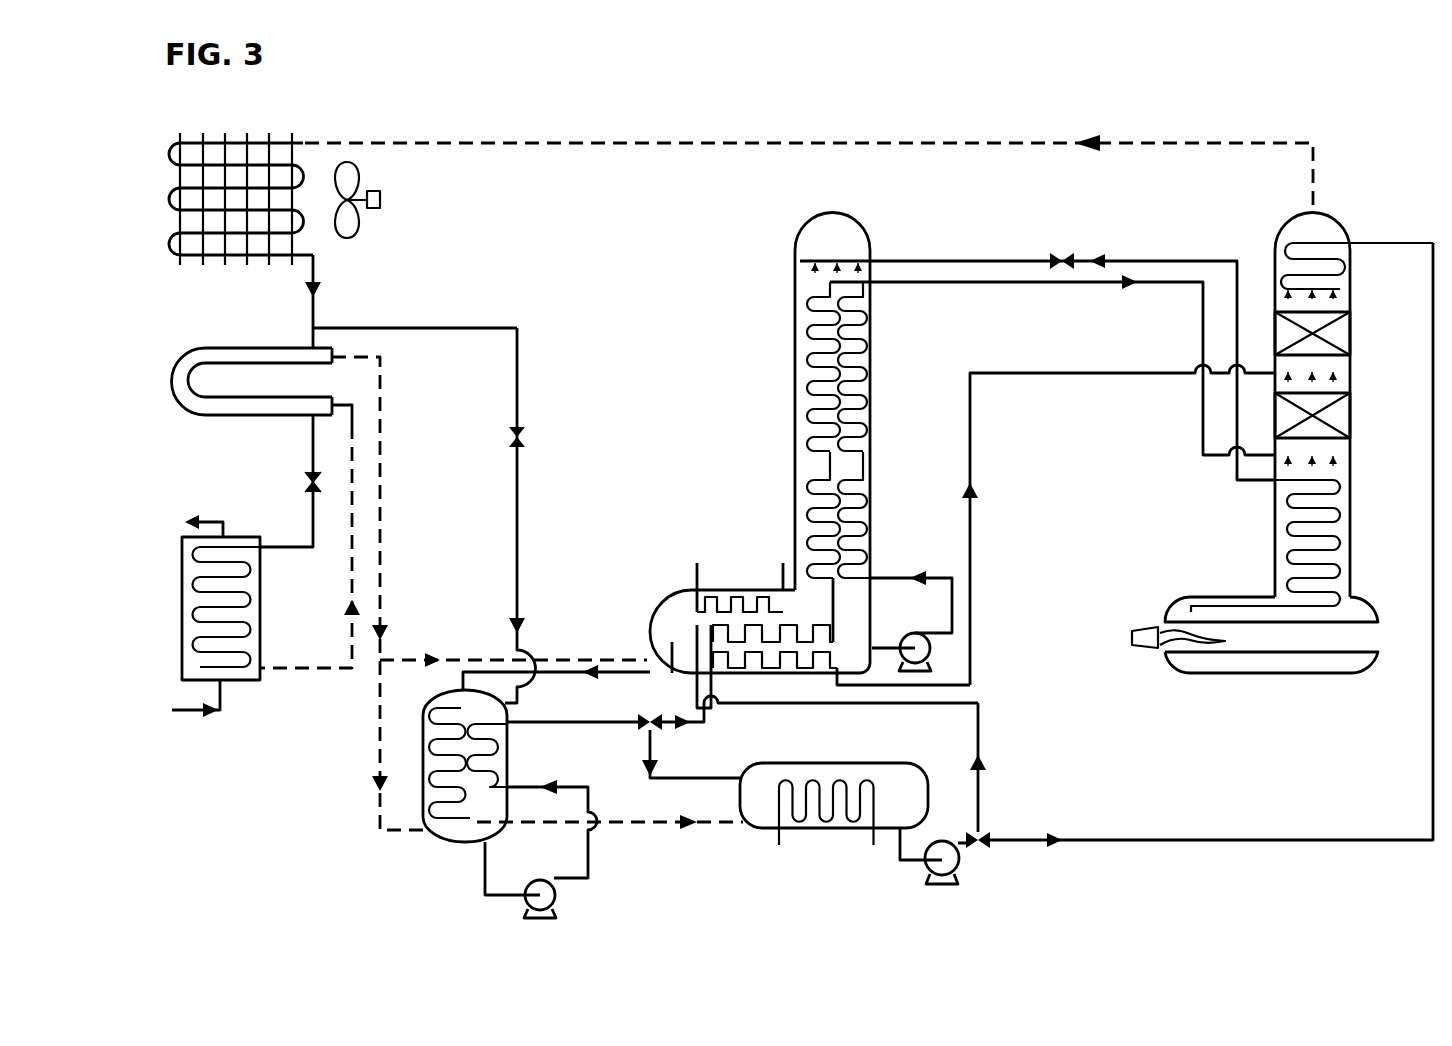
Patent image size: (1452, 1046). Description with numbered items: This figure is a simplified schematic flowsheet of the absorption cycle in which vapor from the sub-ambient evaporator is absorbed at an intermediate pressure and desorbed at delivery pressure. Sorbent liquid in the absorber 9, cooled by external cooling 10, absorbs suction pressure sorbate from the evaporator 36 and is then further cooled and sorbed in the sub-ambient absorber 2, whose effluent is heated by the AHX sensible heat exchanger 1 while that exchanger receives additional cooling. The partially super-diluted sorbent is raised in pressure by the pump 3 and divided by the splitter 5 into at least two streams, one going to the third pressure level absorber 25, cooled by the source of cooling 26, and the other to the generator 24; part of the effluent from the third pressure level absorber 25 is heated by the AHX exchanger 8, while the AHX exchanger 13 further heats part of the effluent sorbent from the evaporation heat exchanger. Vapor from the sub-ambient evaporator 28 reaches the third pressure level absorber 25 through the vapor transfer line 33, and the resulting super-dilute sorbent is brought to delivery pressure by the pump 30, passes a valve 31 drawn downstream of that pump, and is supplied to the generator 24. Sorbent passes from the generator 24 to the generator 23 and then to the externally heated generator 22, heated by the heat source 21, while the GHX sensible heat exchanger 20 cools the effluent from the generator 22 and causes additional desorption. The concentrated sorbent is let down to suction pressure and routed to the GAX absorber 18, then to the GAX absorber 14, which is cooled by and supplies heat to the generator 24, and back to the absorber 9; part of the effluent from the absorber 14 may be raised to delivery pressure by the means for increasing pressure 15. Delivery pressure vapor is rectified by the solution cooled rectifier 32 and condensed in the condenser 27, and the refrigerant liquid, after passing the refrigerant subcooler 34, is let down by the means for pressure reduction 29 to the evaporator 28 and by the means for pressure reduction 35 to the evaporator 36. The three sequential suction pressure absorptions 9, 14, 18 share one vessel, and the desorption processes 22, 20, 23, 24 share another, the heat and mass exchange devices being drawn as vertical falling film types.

The AHX sensible heat exchanger 1 is at (498, 758).
The sub-ambient absorber 2 is at (440, 840).
The pump 3 is at (532, 878).
The splitter 5 is at (638, 712).
The AHX exchanger 8 is at (695, 640).
The absorber 9 is at (660, 602).
The external cooling 10 is at (698, 575).
The internal heat transfer 13 is at (832, 660).
The GAX absorber 14 is at (887, 470).
The means for increasing pressure 15 is at (903, 636).
The GAX absorber 18 is at (887, 295).
The GHX sensible heat exchanger 20 is at (1287, 530).
The heat source 21 is at (1132, 630).
The externally heated generator 22 is at (1280, 677).
The generator 23 is at (1356, 413).
The generator 24 is at (1356, 333).
The 3P absorber 25 is at (872, 762).
The source of cooling 26 is at (781, 845).
The condenser 27 is at (172, 152).
The sub-ambient evaporator 28 is at (428, 710).
The means for pressure reduction 29 is at (526, 440).
The pump 30 is at (960, 868).
The valve 31 is at (988, 832).
The solution cooled rectifier 32 is at (1346, 262).
The vapor transfer line 33 is at (645, 828).
The refrigerant subcooler 34 is at (178, 412).
The means for pressure reduction 35 is at (305, 478).
The evaporator 36 is at (262, 600).